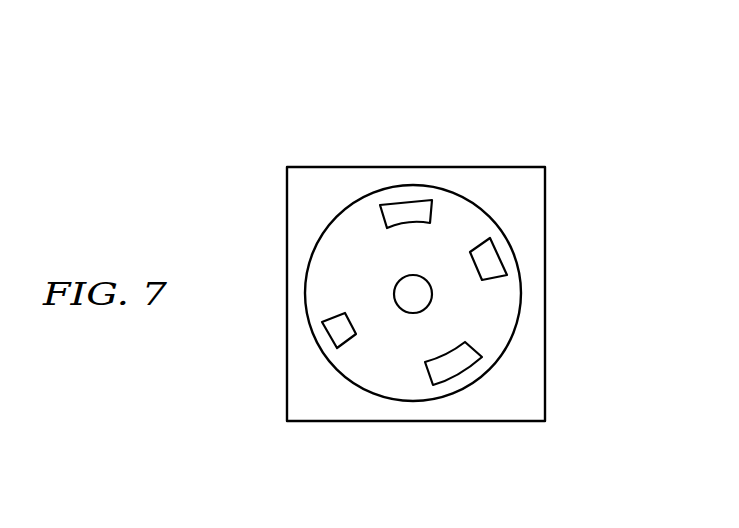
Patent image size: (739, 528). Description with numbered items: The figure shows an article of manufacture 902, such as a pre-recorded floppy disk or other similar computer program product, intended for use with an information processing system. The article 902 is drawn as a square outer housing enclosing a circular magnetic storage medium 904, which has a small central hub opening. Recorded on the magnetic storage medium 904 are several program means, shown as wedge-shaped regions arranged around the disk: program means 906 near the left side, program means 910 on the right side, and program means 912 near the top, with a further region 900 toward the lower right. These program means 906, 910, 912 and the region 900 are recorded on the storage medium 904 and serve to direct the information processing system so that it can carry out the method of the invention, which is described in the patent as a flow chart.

The pneumatic channel opening 900 is at (443, 370).
The vacuum chuck assembly 902 is at (424, 225).
The magnetic storage medium 904 is at (482, 305).
The program means 906 is at (335, 332).
The program means 910 is at (490, 262).
The program means 912 is at (420, 212).